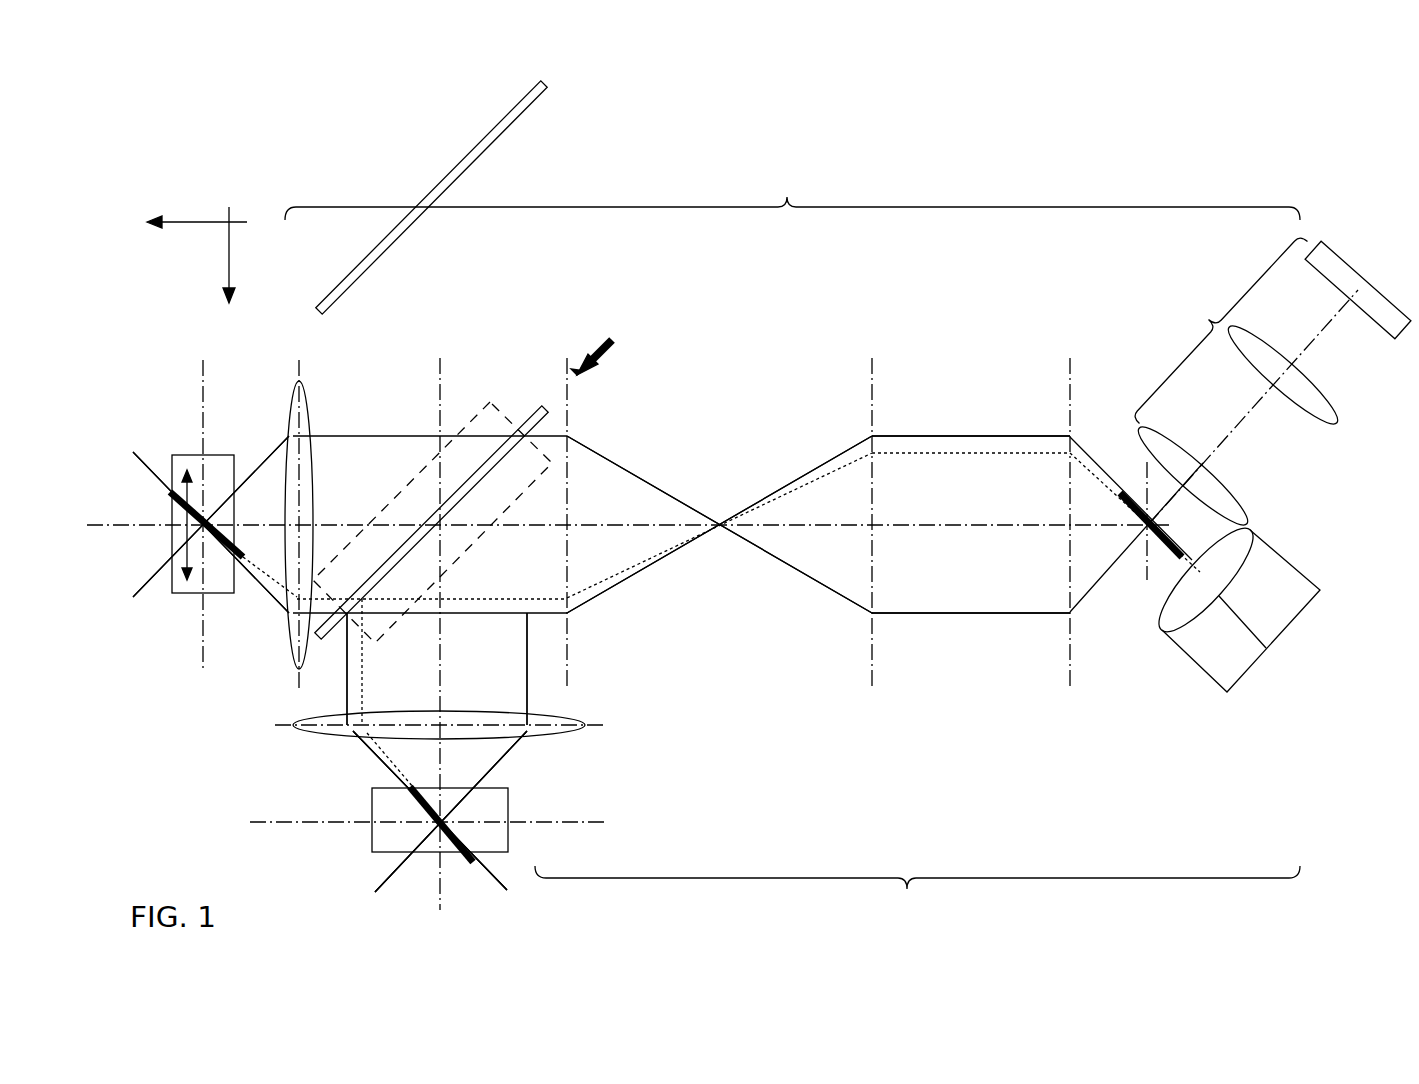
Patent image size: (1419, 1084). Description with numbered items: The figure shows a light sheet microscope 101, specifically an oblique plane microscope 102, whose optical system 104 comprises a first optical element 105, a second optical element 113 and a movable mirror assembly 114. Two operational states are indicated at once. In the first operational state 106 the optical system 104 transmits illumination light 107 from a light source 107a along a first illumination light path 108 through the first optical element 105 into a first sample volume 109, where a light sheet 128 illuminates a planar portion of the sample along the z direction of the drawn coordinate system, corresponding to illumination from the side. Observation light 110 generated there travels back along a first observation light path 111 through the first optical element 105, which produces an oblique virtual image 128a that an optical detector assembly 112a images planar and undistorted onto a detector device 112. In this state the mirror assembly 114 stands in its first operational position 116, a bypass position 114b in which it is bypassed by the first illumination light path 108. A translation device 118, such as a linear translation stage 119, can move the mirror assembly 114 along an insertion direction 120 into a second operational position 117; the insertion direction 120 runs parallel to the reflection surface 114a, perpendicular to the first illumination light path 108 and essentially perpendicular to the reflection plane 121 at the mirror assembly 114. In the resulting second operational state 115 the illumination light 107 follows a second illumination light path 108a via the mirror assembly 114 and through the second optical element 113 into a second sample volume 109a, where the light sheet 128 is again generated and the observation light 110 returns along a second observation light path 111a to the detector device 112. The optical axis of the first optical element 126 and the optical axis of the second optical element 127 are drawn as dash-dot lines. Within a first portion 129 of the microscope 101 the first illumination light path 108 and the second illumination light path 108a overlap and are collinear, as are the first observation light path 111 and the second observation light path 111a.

The light sheet microscope 101 is at (749, 495).
The oblique plane microscope 102 is at (430, 119).
The optical system 104 is at (792, 194).
The first optical element 105 is at (329, 500).
The first operational state 106 is at (306, 400).
The illumination light 107 is at (800, 485).
The light source 107a is at (1287, 548).
The first illumination light path 108 is at (706, 580).
The second illumination light path 108a is at (360, 657).
The first sample volume 109 is at (180, 455).
The second sample volume 109a is at (508, 838).
The observation light 110 is at (288, 440).
The first observation light path 111 is at (255, 473).
The second observation light path 111a is at (668, 493).
The detector device 112 is at (1386, 288).
The optical detector assembly 112a is at (1244, 386).
The second optical element 113 is at (553, 737).
The mirror assembly 114 is at (453, 369).
The reflection surface 114a is at (445, 494).
The bypass position 114b is at (454, 197).
The second operational state 115 is at (480, 691).
The first operational position 116 is at (437, 184).
The second operational position 117 is at (445, 484).
The translation device 118 is at (432, 471).
The linear translation stage 119 is at (427, 462).
The insertion direction 120 is at (613, 352).
The reflection plane 121 is at (450, 517).
The optical axis of the first optical element 126 is at (438, 678).
The optical axis of the second optical element 127 is at (178, 522).
The light sheet 128 is at (227, 552).
The oblique virtual image 128a is at (1173, 560).
The first portion 129 is at (917, 892).